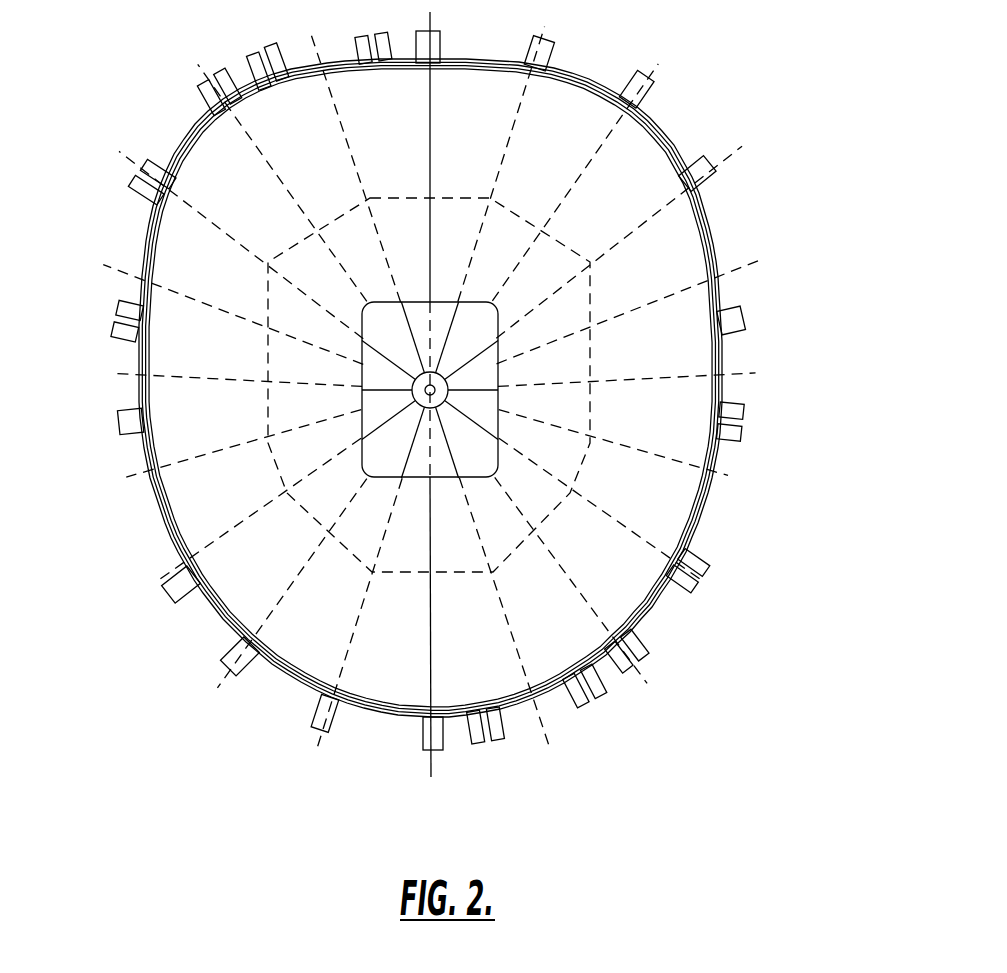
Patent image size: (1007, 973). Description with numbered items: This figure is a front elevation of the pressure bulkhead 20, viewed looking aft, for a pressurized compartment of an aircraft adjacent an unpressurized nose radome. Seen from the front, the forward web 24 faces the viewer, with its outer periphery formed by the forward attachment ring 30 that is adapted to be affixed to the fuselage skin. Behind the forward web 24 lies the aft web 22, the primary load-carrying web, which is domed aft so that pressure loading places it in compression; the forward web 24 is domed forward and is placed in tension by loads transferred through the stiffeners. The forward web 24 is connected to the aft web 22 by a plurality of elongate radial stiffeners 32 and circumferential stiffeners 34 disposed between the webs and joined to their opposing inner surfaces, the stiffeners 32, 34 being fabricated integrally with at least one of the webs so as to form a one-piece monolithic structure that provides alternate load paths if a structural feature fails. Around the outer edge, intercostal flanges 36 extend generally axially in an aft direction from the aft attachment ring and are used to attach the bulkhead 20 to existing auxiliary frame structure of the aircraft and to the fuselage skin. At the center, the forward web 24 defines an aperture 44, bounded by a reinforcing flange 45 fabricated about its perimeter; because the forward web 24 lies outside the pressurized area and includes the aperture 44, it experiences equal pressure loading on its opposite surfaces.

The pressure bulkhead 20 is at (460, 394).
The aft web 22 is at (439, 367).
The forward web 24 is at (673, 265).
The forward attachment ring 30 is at (185, 156).
The radial stiffeners 32 is at (613, 517).
The circumferential stiffeners 34 is at (403, 197).
The intercostal flanges 36 is at (195, 95).
The aperture 44 is at (388, 322).
The reinforcing flange 45 is at (477, 302).